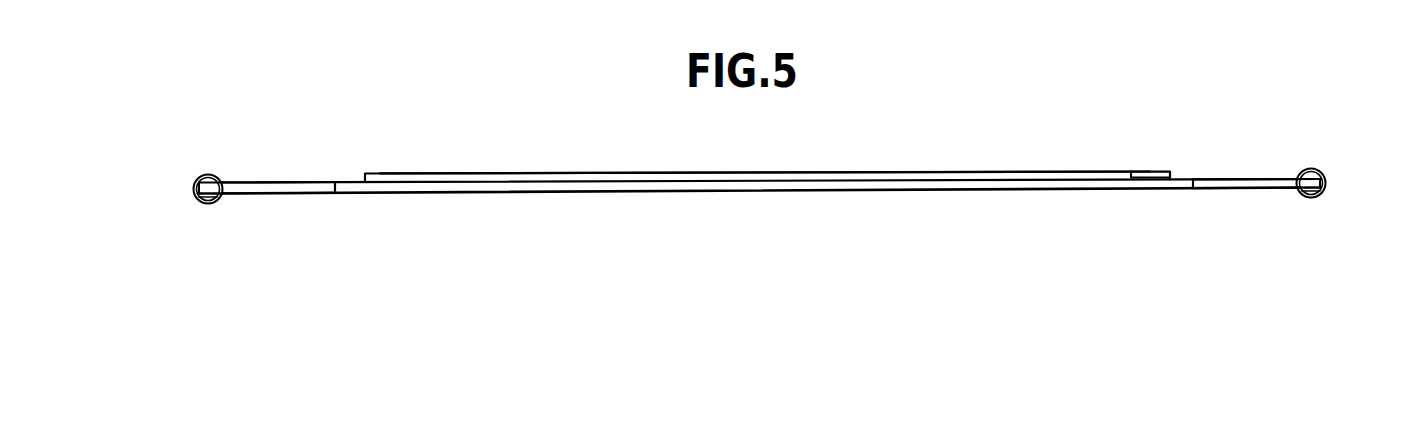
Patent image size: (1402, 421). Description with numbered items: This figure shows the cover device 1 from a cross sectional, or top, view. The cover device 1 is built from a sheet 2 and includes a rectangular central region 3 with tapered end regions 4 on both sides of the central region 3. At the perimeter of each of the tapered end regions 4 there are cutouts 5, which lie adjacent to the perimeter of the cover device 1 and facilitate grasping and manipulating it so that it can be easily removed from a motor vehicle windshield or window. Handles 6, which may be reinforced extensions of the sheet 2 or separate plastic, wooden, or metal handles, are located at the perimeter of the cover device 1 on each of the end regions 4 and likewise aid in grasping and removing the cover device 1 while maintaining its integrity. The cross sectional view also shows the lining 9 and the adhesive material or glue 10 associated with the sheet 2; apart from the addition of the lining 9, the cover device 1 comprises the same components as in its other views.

The cover device 1 is at (262, 208).
The sheet 2 is at (436, 193).
The central region 3 is at (746, 178).
The tapered end regions 4 is at (302, 182).
The cutouts 5 is at (230, 182).
The handles 6 is at (196, 199).
The lining 9 is at (967, 172).
The adhesive material or glue 10 is at (1131, 171).